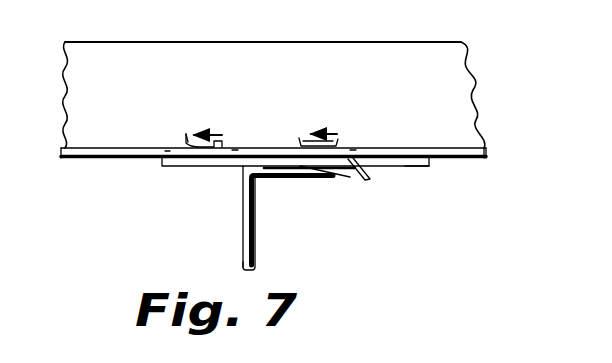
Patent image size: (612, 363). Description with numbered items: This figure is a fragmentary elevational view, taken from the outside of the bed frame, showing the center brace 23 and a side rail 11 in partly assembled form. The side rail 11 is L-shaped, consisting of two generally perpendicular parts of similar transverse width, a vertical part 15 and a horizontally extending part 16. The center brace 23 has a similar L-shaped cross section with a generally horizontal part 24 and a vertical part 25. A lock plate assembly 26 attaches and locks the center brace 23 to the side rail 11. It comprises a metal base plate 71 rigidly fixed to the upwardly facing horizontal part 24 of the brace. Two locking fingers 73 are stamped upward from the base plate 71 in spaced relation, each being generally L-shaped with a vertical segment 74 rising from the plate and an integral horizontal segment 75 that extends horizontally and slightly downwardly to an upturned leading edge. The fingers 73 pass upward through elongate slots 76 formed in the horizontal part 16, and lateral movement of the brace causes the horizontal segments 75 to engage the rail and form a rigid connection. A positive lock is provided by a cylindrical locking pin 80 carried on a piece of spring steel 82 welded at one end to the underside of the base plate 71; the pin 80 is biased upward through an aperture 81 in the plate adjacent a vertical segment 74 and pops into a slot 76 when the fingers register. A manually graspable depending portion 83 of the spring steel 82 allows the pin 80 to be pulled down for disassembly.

The side rail 11 is at (473, 40).
The vertical part of side rail 15 is at (452, 87).
The horizontal part of side rail 16 is at (482, 160).
The center brace 23 is at (234, 200).
The horizontal part of center brace 24 is at (283, 179).
The vertical part of center brace 25 is at (245, 240).
The lock plate assembly 26 is at (443, 139).
The base plate 71 is at (178, 166).
The locking fingers 73 is at (224, 144).
The vertical segment of finger 74 is at (234, 147).
The horizontal segment of finger 75 is at (187, 142).
The slots 76 is at (173, 147).
The locking pin 80 is at (318, 165).
The aperture 81 is at (406, 168).
The spring steel 82 is at (344, 173).
The depending portion 83 is at (372, 183).